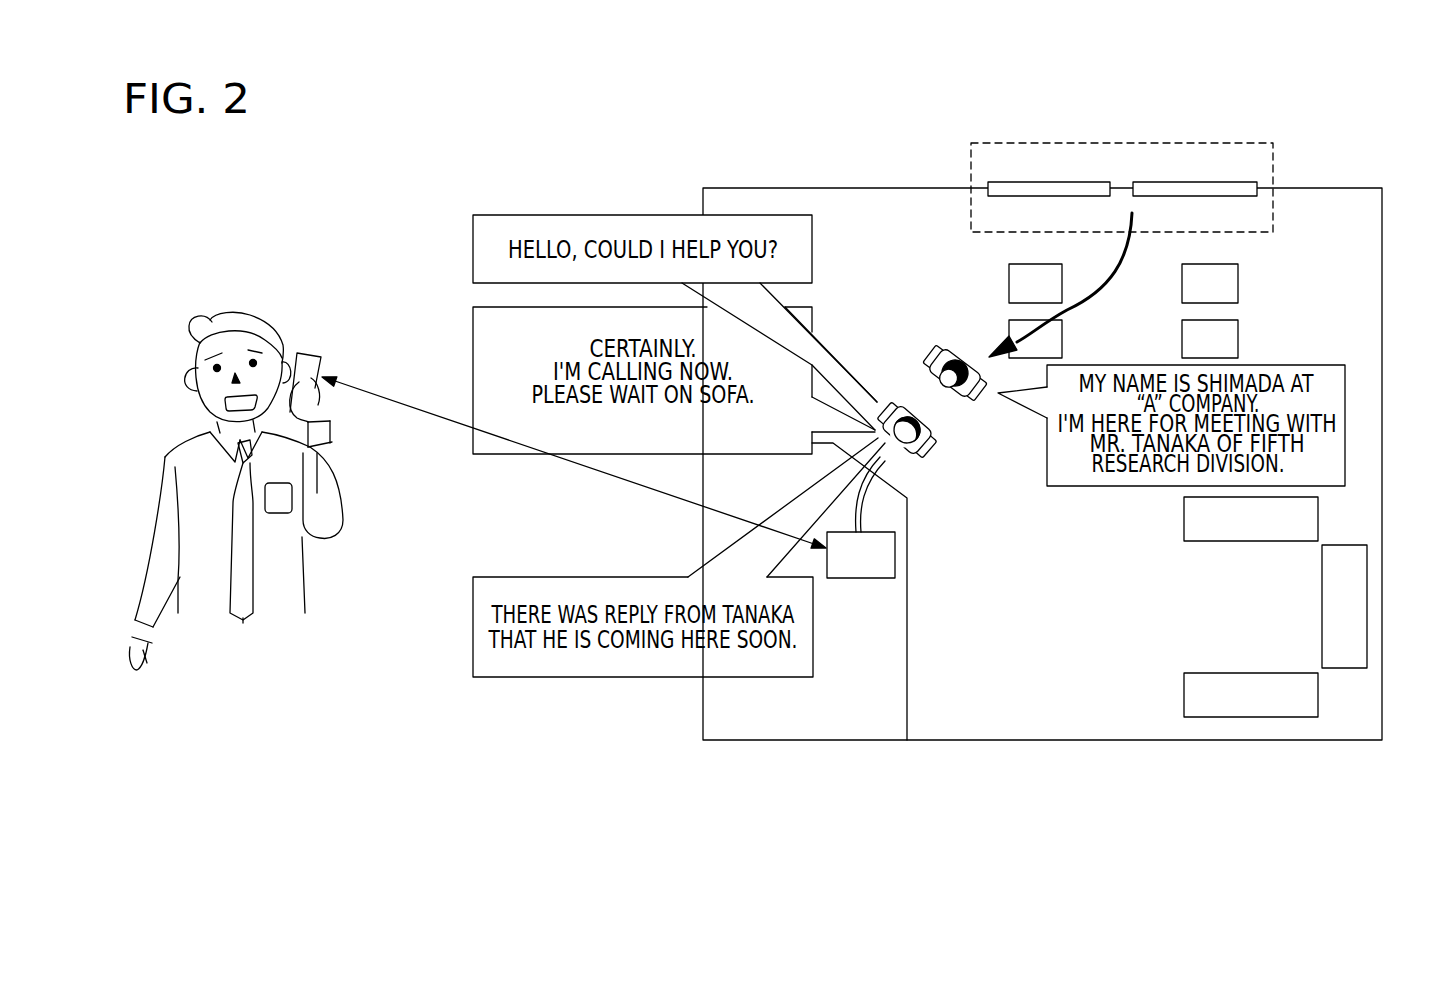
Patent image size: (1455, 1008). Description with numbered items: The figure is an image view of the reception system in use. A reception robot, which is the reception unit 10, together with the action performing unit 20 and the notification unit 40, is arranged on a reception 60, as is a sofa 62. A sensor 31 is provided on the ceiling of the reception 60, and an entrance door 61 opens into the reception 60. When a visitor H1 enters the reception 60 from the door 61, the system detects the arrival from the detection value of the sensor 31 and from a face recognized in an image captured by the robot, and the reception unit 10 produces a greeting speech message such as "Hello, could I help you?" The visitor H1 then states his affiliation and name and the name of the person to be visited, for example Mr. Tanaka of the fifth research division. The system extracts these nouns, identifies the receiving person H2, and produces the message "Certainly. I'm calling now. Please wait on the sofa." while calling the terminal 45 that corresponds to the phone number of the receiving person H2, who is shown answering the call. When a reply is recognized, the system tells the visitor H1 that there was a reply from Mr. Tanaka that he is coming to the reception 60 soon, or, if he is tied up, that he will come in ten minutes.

The reception unit 10 is at (908, 452).
The action performing unit 20 is at (922, 521).
The notification unit 40 is at (895, 555).
The sensor 31 is at (1010, 334).
The terminal 45 is at (311, 350).
The reception 60 is at (1310, 207).
The entrance door 61 is at (1118, 143).
The sofa 62 is at (1345, 527).
The visitor H1 is at (925, 357).
The receiving person H2 is at (242, 312).